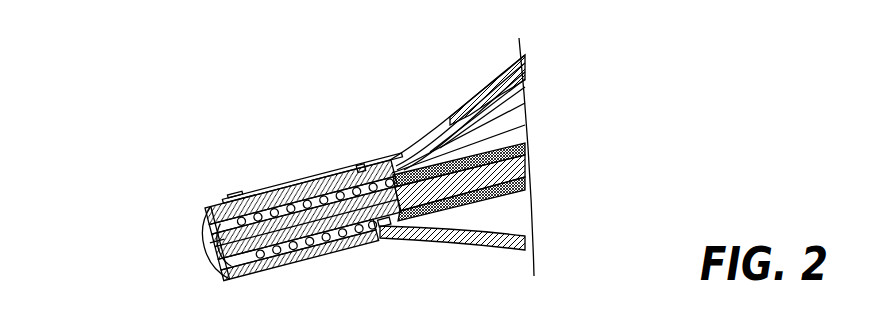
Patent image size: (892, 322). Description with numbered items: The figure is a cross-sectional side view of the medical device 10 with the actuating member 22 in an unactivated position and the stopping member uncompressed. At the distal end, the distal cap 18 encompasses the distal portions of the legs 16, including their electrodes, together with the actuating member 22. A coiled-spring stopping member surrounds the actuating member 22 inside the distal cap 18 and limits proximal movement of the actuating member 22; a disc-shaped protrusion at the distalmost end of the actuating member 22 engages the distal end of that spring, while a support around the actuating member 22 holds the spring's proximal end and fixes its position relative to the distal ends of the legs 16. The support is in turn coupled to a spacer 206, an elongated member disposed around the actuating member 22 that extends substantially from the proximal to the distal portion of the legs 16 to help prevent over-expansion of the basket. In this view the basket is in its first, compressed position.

The medical device 10 is at (100, 124).
The distal cap 18 is at (282, 146).
The legs 16 is at (513, 91).
The actuating member 22 is at (525, 177).
The spacer 206 is at (507, 194).